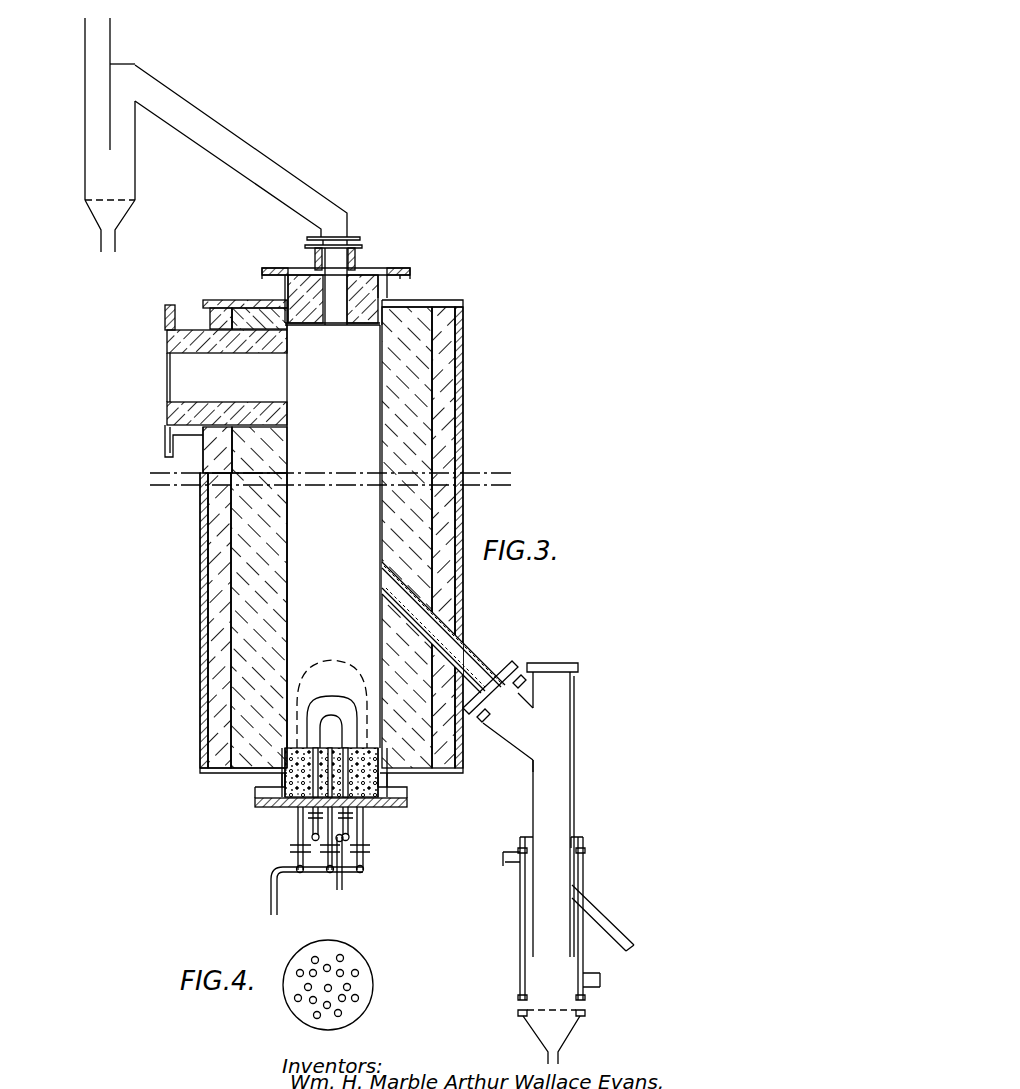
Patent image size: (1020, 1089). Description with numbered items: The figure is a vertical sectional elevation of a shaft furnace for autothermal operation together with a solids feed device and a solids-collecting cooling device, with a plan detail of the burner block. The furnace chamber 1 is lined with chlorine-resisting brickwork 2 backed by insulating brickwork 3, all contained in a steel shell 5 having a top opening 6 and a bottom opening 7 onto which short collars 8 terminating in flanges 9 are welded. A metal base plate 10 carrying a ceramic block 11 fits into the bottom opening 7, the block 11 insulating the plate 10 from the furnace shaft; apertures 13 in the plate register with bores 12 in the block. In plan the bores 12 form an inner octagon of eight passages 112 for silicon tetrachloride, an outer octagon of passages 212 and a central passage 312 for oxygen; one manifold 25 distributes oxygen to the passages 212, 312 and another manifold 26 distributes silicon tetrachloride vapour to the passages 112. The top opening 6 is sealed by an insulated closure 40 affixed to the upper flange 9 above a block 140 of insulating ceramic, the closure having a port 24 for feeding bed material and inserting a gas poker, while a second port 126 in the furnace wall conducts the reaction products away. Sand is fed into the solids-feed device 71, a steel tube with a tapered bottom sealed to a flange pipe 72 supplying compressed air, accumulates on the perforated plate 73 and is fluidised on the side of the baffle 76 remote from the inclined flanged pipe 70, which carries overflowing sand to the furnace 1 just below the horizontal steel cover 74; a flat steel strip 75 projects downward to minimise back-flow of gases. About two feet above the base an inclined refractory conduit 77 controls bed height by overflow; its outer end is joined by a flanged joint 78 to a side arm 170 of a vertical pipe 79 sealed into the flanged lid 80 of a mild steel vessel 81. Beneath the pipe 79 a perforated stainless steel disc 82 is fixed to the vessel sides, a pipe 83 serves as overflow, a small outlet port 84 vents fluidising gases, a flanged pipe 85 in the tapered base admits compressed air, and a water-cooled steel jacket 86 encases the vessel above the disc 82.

In FIG. 3, the furnace chamber 1 is at (463, 382).
In FIG. 3, the chlorine-resisting brickwork 2 is at (416, 515).
In FIG. 3, the insulating brickwork 3 is at (445, 574).
In FIG. 3, the steel shell 5 is at (463, 428).
In FIG. 3, the top opening 6 is at (356, 334).
In FIG. 3, the bottom opening 7 is at (290, 720).
In FIG. 3, the short collar 8 is at (388, 292).
In FIG. 3, the flange 9 is at (402, 277).
In FIG. 3, the metal base plate 10 is at (395, 808).
In FIG. 3, the ceramic block 11 is at (285, 776).
In FIG. 4, the ceramic block 11 is at (296, 1012).
In FIG. 3, the bores 12 is at (385, 792).
In FIG. 3, the apertures 13 is at (360, 810).
In FIG. 3, the port 24 is at (340, 258).
In FIG. 3, the manifold 25 is at (313, 872).
In FIG. 3, the manifold 26 is at (342, 890).
In FIG. 3, the closure 40 is at (398, 270).
In FIG. 3, the inclined flanged pipe 70 is at (170, 103).
In FIG. 3, the solids-feed device 71 is at (85, 88).
In FIG. 3, the flange pipe 72 is at (115, 238).
In FIG. 3, the perforated plate 73 is at (120, 200).
In FIG. 3, the horizontal steel cover 74 is at (130, 64).
In FIG. 3, the flat steel strip 75 is at (110, 42).
In FIG. 3, the baffle 76 is at (112, 148).
In FIG. 3, the conduit 77 is at (452, 648).
In FIG. 3, the flanged joint 78 is at (514, 668).
In FIG. 3, the vertical pipe 79 is at (572, 746).
In FIG. 3, the flanged lid 80 is at (587, 843).
In FIG. 3, the mild steel vessel 81 is at (593, 838).
In FIG. 3, the stainless steel disc 82 is at (540, 1016).
In FIG. 3, the pipe 83 is at (606, 905).
In FIG. 3, the outlet port 84 is at (573, 822).
In FIG. 3, the flanged pipe 85 is at (548, 1063).
In FIG. 3, the steel jacket 86 is at (520, 935).
In FIG. 3, the passages 112 is at (332, 720).
In FIG. 4, the passages 112 is at (331, 1006).
In FIG. 3, the second port 126 is at (182, 380).
In FIG. 3, the block of insulating ceramic material 140 is at (290, 287).
In FIG. 3, the side arm 170 is at (508, 740).
In FIG. 3, the passages 212 is at (332, 704).
In FIG. 4, the passages 212 is at (358, 973).
In FIG. 3, the passage 312 is at (334, 731).
In FIG. 4, the passage 312 is at (332, 989).